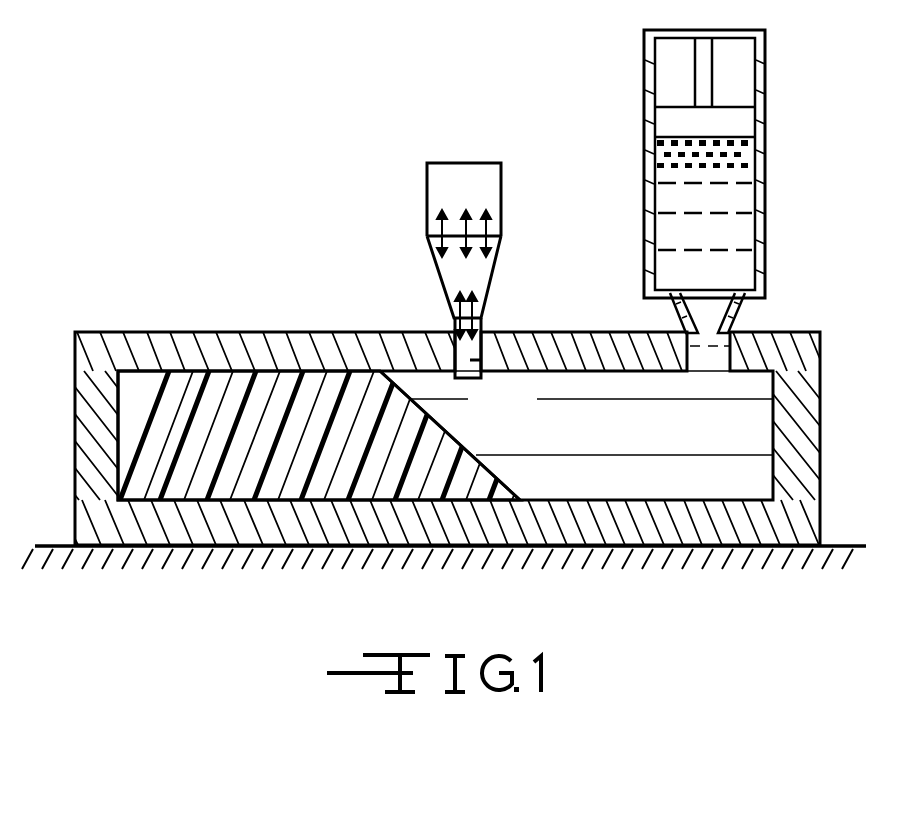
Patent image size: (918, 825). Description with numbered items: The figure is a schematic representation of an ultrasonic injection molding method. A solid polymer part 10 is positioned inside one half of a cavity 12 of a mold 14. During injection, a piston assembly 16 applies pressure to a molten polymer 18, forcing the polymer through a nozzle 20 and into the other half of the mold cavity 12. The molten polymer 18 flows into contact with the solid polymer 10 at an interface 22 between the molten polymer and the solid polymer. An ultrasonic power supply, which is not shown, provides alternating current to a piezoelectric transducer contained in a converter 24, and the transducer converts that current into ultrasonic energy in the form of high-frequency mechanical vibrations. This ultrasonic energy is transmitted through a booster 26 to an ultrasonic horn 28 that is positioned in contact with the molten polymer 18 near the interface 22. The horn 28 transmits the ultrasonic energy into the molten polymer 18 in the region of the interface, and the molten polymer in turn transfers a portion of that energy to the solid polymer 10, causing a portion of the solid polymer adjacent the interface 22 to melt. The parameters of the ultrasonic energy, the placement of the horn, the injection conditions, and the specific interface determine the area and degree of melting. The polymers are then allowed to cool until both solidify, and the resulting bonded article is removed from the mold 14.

The solid polymer part 10 is at (340, 403).
The cavity 12 is at (632, 485).
The mold 14 is at (175, 352).
The piston assembly 16 is at (728, 122).
The molten polymer 18 is at (733, 222).
The nozzle 20 is at (730, 328).
The interface 22 is at (464, 448).
The converter 24 is at (473, 183).
The booster 26 is at (480, 270).
The ultrasonic horn 28 is at (470, 358).